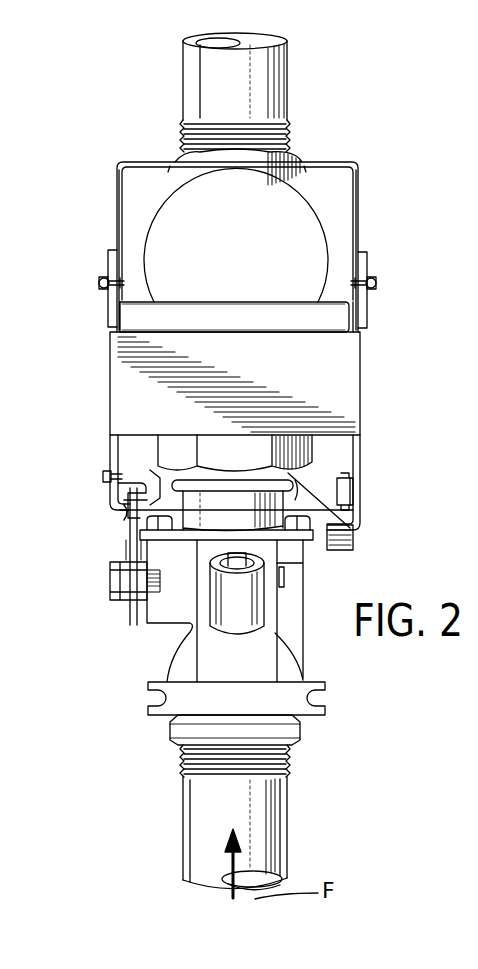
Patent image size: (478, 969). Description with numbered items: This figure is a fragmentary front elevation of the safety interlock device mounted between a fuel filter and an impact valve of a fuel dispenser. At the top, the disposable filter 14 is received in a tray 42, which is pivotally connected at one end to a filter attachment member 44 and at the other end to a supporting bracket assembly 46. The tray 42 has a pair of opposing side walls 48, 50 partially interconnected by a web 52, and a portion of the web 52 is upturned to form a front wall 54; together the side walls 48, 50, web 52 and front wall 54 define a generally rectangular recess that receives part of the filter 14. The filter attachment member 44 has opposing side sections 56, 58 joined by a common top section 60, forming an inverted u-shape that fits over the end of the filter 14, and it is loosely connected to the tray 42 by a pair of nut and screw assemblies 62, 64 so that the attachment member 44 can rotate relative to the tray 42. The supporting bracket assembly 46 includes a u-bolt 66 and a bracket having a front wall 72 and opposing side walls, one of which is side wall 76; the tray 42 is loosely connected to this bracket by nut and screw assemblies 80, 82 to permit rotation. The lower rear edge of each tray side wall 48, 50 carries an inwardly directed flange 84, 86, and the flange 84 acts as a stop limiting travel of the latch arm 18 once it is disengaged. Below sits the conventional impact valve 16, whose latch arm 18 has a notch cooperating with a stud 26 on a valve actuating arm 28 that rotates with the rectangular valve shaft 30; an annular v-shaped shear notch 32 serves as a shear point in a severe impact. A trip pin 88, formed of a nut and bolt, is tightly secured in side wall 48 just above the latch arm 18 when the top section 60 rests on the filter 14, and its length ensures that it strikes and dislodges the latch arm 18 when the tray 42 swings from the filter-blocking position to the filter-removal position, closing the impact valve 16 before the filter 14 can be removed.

The filter 14 is at (248, 225).
The impact valve 16 is at (303, 663).
The latch arm 18 is at (110, 510).
The stud 26 is at (110, 537).
The valve actuating arm 28 is at (118, 558).
The valve shaft 30 is at (133, 600).
The shear notch 32 is at (229, 527).
The tray 42 is at (370, 378).
The filter attachment member 44 is at (366, 178).
The supporting bracket assembly 46 is at (324, 466).
The side wall 48 is at (110, 310).
The side wall 50 is at (363, 310).
The web 52 is at (342, 403).
The front wall 54 is at (243, 318).
The side section 56 is at (117, 204).
The side section 58 is at (359, 223).
The top section 60 is at (153, 162).
The nut and screw assembly 62 is at (103, 280).
The nut and screw assembly 64 is at (368, 284).
The u-bolt 66 is at (352, 526).
The front wall 72 is at (363, 503).
The side wall 76 is at (350, 492).
The nut and screw assembly 80 is at (108, 472).
The nut and screw assembly 82 is at (365, 476).
The flange 84 is at (113, 552).
The flange 86 is at (347, 553).
The trip pin 88 is at (103, 488).